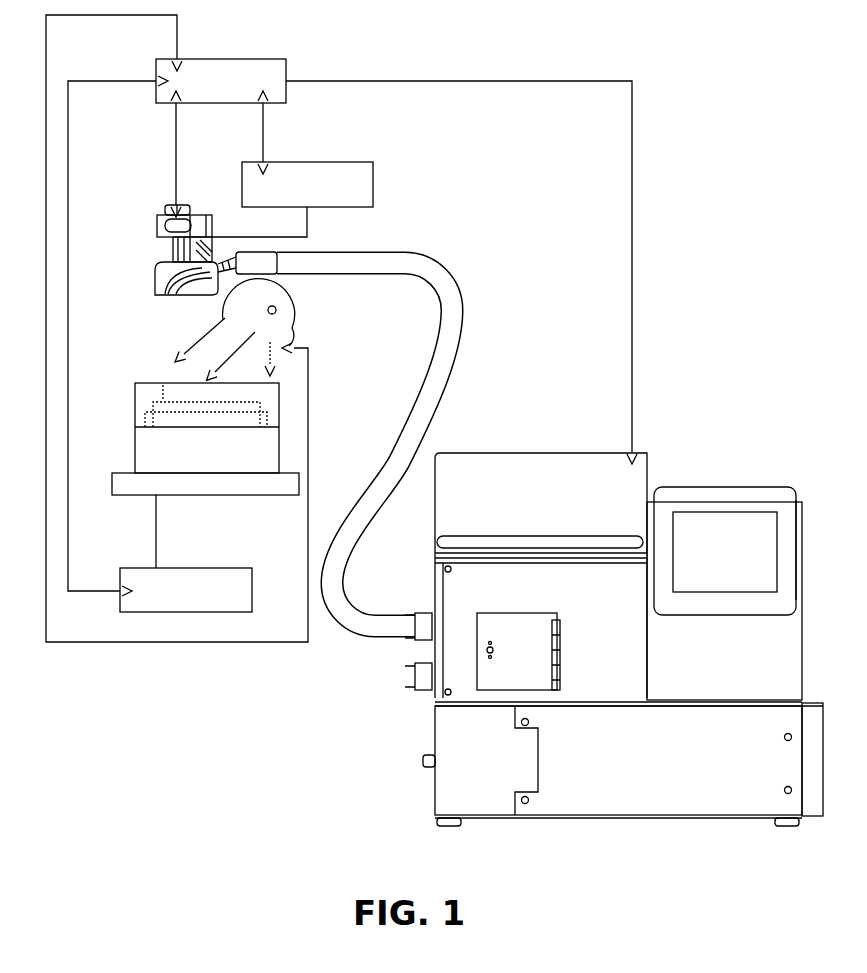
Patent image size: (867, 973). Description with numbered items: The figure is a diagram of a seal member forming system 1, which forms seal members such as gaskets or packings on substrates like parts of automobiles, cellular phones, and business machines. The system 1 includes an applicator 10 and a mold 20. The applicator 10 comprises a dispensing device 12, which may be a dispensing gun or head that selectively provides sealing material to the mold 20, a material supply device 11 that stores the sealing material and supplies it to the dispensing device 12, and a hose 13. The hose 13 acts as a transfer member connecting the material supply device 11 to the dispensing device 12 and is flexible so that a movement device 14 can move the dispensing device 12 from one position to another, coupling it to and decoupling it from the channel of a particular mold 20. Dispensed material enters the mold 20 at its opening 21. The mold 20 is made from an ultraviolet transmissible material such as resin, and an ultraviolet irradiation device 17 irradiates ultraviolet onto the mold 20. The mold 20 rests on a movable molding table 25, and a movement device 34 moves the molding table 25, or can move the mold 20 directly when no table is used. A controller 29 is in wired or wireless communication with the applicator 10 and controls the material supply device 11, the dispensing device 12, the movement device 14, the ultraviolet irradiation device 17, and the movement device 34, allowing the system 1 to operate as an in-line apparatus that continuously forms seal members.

The seal member forming system 1 is at (666, 88).
The applicator 10 is at (497, 299).
The material supply device 11 is at (546, 452).
The dispensing device 12 is at (155, 268).
The hose 13 is at (432, 408).
The movement device 14 is at (310, 162).
The ultraviolet irradiation device 17 is at (292, 334).
The mold 20 is at (135, 395).
The opening 21 is at (165, 383).
The molding table 25 is at (198, 495).
The controller 29 is at (221, 59).
The movement device 34 is at (232, 568).